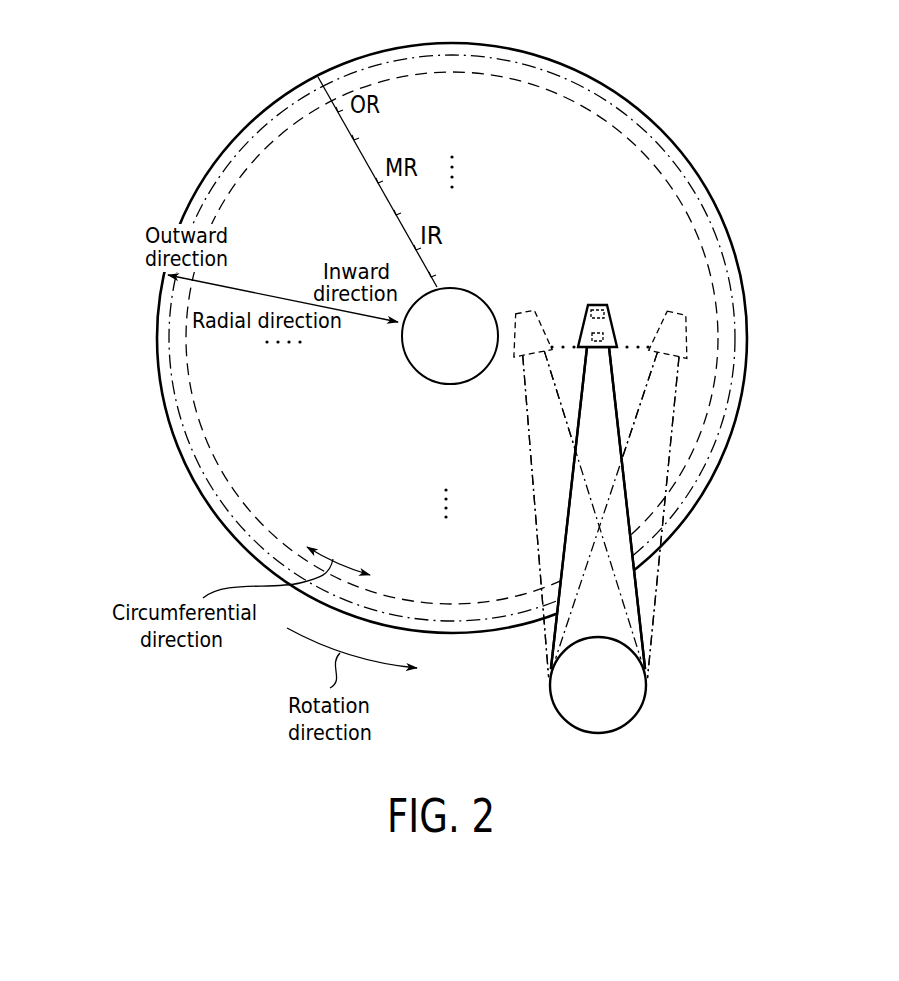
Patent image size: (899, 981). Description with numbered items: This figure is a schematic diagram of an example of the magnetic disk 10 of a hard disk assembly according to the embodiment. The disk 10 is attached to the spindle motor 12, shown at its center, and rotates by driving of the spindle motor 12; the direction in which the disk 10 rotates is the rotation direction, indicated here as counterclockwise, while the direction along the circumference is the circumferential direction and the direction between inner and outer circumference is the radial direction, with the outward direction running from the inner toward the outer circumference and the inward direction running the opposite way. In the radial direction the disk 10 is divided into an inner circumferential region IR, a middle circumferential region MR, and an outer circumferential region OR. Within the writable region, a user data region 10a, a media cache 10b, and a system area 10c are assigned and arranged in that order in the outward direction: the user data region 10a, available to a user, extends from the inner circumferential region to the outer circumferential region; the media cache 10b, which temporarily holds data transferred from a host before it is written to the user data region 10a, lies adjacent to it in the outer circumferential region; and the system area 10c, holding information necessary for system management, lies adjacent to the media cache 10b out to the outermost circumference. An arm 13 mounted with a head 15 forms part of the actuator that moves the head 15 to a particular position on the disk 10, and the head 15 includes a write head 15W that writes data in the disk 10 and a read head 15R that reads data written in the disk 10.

The magnetic disk 10 is at (402, 338).
The user data region 10a is at (203, 342).
The media cache 10b is at (178, 378).
The system area 10c is at (173, 422).
The spindle motor 12 is at (432, 367).
The arm 13 is at (621, 495).
The head 15 is at (603, 302).
The write head 15W is at (598, 305).
The read head 15R is at (607, 337).